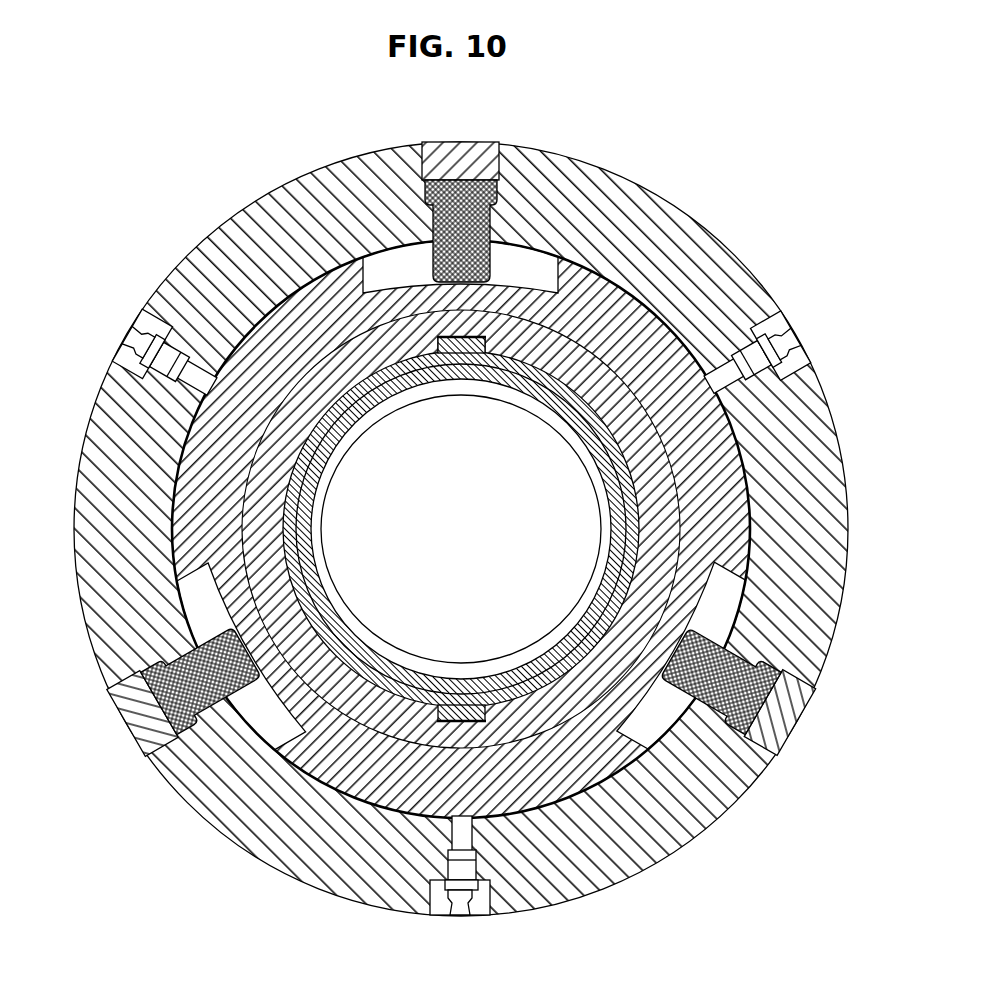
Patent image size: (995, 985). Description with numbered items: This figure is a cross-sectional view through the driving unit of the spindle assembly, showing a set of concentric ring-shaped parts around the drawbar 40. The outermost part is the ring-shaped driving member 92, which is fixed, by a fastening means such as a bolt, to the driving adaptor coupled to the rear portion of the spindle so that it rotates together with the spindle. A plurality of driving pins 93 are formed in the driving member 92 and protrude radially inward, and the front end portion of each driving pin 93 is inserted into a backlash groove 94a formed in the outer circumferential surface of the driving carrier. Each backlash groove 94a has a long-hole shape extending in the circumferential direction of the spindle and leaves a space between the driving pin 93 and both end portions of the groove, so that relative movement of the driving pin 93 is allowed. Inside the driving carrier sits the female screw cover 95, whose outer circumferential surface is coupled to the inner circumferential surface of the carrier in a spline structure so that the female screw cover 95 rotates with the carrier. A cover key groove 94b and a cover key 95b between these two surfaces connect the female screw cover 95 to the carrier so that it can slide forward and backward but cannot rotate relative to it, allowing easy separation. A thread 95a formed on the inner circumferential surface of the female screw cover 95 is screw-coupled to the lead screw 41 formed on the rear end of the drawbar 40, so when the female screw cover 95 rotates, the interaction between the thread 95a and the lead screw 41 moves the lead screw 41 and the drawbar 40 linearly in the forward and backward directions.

The drawbar 40 is at (345, 345).
The lead screw 41 is at (300, 455).
The driving member 92 is at (225, 247).
The driving pin 93 is at (493, 221).
The backlash groove 94a is at (537, 272).
The cover key groove 94b is at (447, 336).
The female screw cover 95 is at (290, 485).
The thread 95a is at (290, 537).
The cover key 95b is at (437, 338).